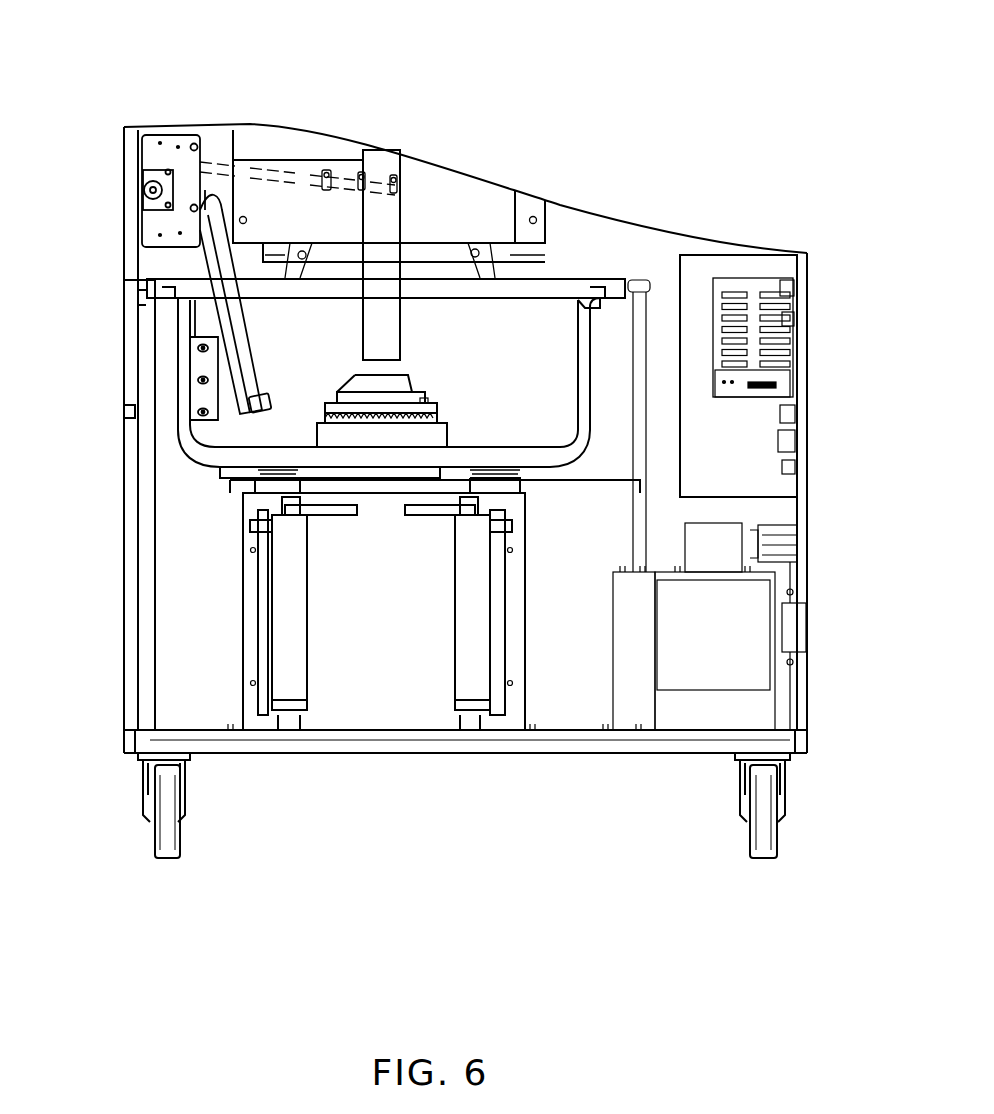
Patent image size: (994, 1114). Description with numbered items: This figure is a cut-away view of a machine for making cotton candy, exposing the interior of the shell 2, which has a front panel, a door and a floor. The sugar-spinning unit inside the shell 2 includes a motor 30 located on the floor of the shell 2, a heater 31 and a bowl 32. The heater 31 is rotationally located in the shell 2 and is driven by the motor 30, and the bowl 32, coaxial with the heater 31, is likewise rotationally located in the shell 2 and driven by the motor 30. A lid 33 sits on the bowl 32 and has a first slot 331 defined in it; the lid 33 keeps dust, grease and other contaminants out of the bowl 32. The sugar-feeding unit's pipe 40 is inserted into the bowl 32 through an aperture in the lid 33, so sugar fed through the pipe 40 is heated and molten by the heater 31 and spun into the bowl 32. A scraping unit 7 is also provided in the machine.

The shell 2 is at (130, 683).
The scraping unit 7 is at (175, 125).
The motor 30 is at (432, 693).
The heater 31 is at (437, 433).
The bowl 32 is at (580, 342).
The lid 33 is at (557, 298).
The first slot 331 is at (190, 331).
The pipe 40 is at (385, 158).